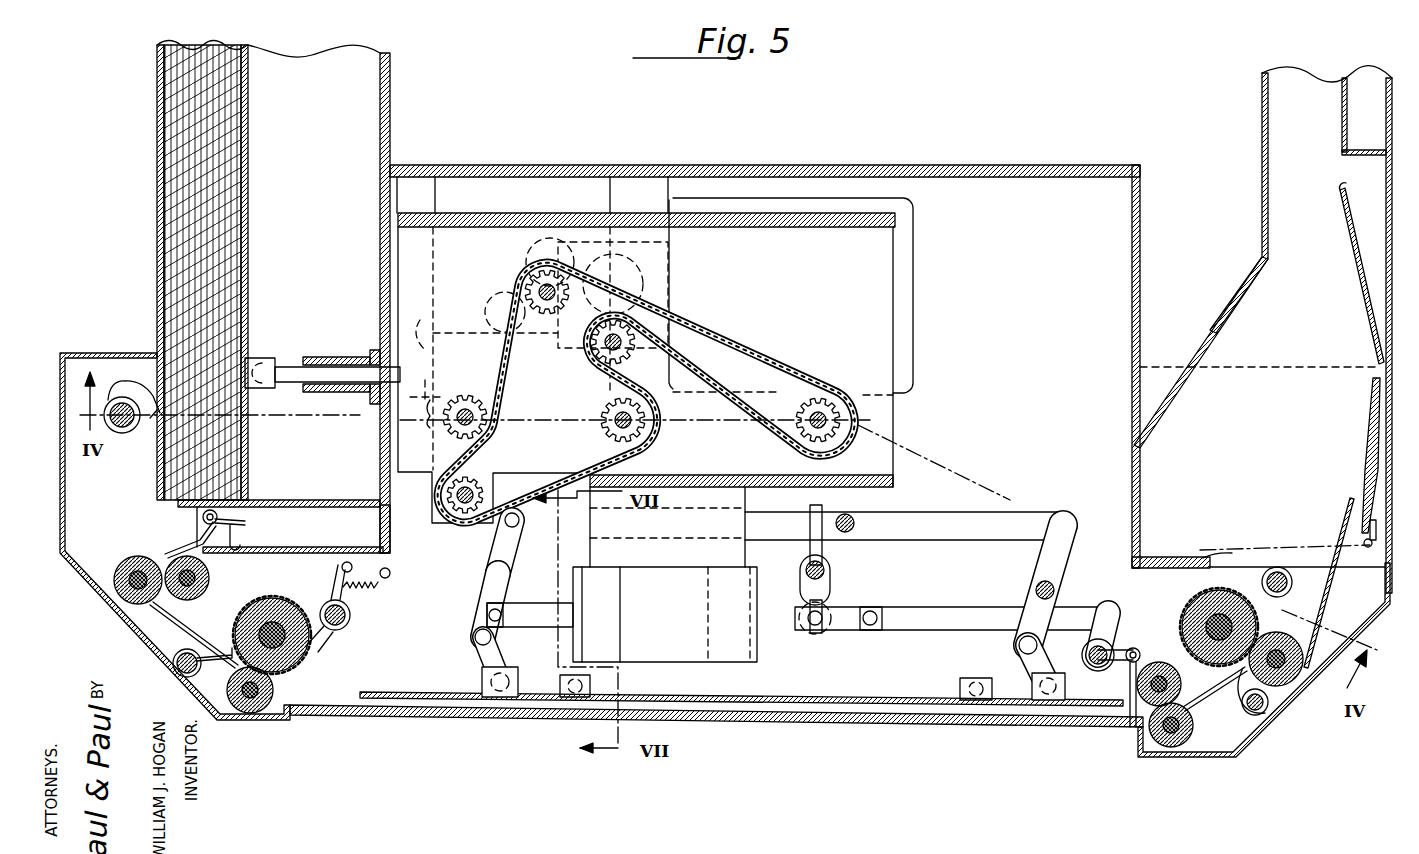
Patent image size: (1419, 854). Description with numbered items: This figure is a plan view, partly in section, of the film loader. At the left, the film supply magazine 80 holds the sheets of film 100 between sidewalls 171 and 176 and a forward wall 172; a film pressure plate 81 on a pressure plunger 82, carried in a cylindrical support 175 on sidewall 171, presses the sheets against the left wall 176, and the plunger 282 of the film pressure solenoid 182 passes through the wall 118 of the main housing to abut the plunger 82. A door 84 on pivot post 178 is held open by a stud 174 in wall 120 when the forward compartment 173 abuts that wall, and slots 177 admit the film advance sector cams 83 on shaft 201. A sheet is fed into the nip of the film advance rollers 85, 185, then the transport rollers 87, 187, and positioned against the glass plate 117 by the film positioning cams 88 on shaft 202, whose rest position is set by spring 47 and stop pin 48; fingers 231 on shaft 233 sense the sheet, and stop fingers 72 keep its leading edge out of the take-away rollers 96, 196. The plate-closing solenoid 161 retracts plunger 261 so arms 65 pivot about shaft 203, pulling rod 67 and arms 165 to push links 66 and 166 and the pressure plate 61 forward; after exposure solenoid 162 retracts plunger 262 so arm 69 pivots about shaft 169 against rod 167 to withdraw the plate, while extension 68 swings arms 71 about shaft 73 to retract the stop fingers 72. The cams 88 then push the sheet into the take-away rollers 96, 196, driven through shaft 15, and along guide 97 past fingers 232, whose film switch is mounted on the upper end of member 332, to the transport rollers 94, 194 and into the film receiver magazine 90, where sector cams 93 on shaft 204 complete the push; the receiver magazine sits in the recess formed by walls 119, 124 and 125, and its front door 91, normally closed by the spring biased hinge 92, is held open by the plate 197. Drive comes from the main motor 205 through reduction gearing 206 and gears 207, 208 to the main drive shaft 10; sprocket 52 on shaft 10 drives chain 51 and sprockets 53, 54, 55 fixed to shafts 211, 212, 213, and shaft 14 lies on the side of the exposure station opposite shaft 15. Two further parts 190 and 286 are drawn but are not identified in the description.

The main drive shaft 10 is at (540, 290).
The shaft 14 is at (290, 660).
The shaft 15 is at (1186, 625).
The spring 47 is at (386, 579).
The stop pin 48 is at (353, 567).
The chain 51 is at (738, 345).
The sprocket 52 is at (540, 272).
The sprocket 53 is at (445, 432).
The sprocket 54 is at (612, 398).
The sprocket 55 is at (815, 405).
The pressure plate 61 is at (738, 698).
The arms 65 is at (497, 548).
The link 66 is at (482, 658).
The rod 67 is at (978, 530).
The extension 68 is at (928, 607).
The arm 69 is at (806, 585).
The arms 71 is at (1112, 635).
The stop fingers 72 is at (1130, 680).
The shaft 73 is at (1082, 655).
The film supply magazine 80 is at (365, 126).
The film pressure plate 81 is at (248, 186).
The pressure plunger 82 is at (290, 360).
The film advance sector cams 83 is at (125, 380).
The door 84 is at (185, 536).
The film advance roller 85 is at (125, 566).
The transport roller 87 is at (252, 713).
The film positioning cams 88 is at (320, 632).
The film receiver magazine 90 is at (1290, 235).
The front door 91 is at (1366, 462).
The spring biased hinge 92 is at (1362, 524).
The film-engaging sector cams 93 is at (1243, 580).
The transport roller 94 is at (1300, 674).
The take-away roller 96 is at (1180, 748).
The guide 97 is at (1226, 700).
The sheets of film 100 is at (185, 232).
The glass plate 117 is at (478, 722).
The wall 118 is at (388, 514).
The wall 119 is at (1132, 318).
The wall 120 is at (278, 553).
The wall 124 is at (1165, 568).
The wall 125 is at (1386, 178).
The plate-closing solenoid 161 is at (614, 611).
The solenoid 162 is at (681, 614).
The arms 165 is at (1050, 556).
The link 166 is at (1018, 665).
The rod 167 is at (852, 515).
The shaft 169 is at (826, 570).
The sidewall 171 is at (380, 200).
The forward wall 172 is at (296, 500).
The forward compartment 173 is at (272, 527).
The stud 174 is at (235, 532).
The cylindrical support 175 is at (328, 357).
The left wall 176 is at (157, 180).
The slots 177 is at (152, 420).
The pivot post 178 is at (202, 517).
The film pressure solenoid 182 is at (480, 348).
The film advance roller 185 is at (210, 578).
The transport roller 187 is at (258, 612).
The hopper slanted wall 190 is at (1233, 314).
The transport roller 194 is at (1196, 602).
The take-away roller 196 is at (1160, 664).
The plate 197 is at (1328, 618).
The shaft 201 is at (118, 432).
The shaft 202 is at (350, 620).
The shaft 203 is at (486, 578).
The shaft 204 is at (1280, 568).
The main motor 205 is at (905, 262).
The reduction gearing 206 is at (560, 244).
The gear 207 is at (645, 282).
The gear 208 is at (500, 300).
The shaft 211 is at (465, 410).
The shaft 212 is at (612, 425).
The shaft 213 is at (828, 405).
The fingers 231 is at (220, 650).
The fingers 232 is at (1268, 705).
The shaft 233 is at (176, 670).
The plunger 261 is at (532, 603).
The plunger 262 is at (800, 630).
The plunger 282 is at (419, 404).
The guide 286 is at (160, 622).
The film switch mounting member 332 is at (1262, 716).